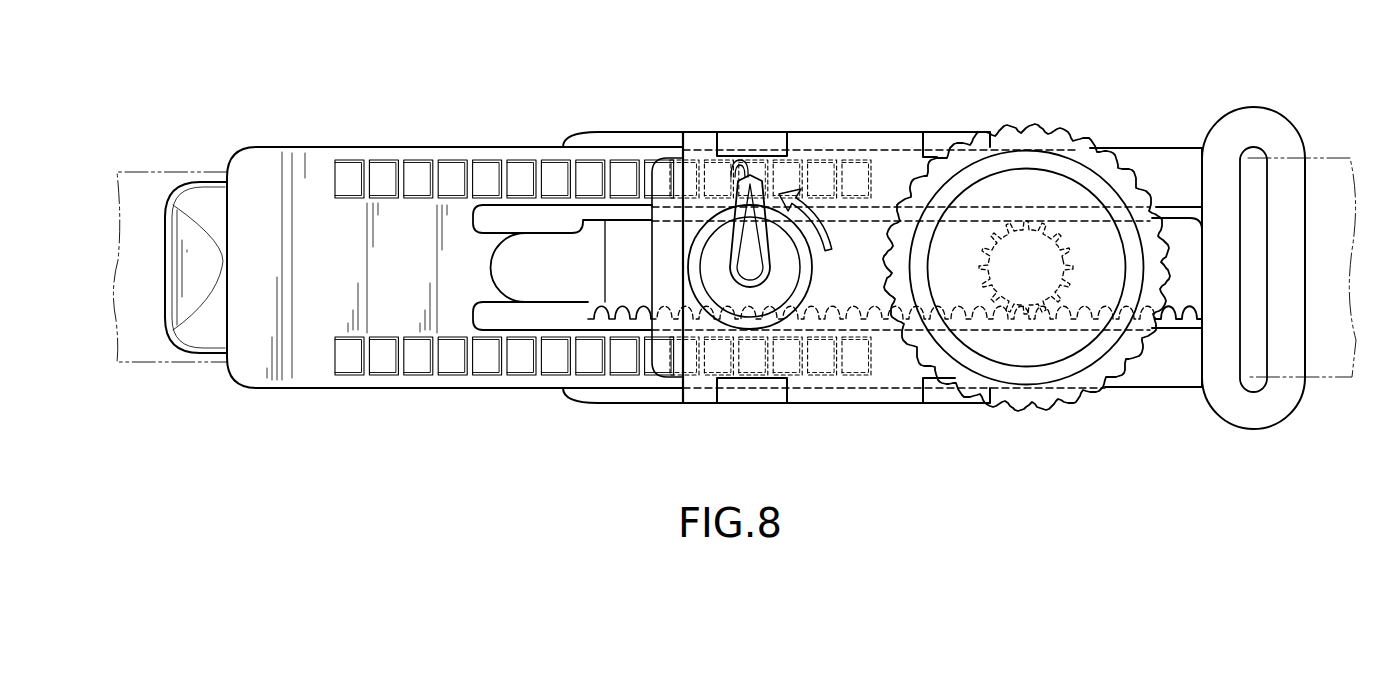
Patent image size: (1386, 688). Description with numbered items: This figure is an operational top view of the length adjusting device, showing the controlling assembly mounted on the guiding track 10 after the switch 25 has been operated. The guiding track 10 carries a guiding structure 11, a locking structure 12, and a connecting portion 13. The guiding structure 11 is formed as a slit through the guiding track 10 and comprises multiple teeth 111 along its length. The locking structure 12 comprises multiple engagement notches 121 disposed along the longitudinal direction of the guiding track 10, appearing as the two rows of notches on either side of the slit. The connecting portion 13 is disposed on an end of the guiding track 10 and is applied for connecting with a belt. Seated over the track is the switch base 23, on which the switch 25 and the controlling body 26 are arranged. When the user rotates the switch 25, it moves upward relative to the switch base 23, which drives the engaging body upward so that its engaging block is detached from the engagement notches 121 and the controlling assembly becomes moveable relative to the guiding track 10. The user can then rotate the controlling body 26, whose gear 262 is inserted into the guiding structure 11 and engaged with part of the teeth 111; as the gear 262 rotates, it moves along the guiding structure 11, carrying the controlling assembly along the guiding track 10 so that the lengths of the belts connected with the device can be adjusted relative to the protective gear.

The guiding track 10 is at (285, 131).
The guiding structure 11 is at (837, 267).
The teeth 111 is at (625, 298).
The locking structure 12 is at (386, 153).
The engagement notches 121 is at (455, 172).
The connecting portion 13 is at (1245, 168).
The switch base 23 is at (899, 153).
The switch 25 is at (795, 264).
The controlling body 26 is at (1026, 280).
The gear 262 is at (1046, 256).